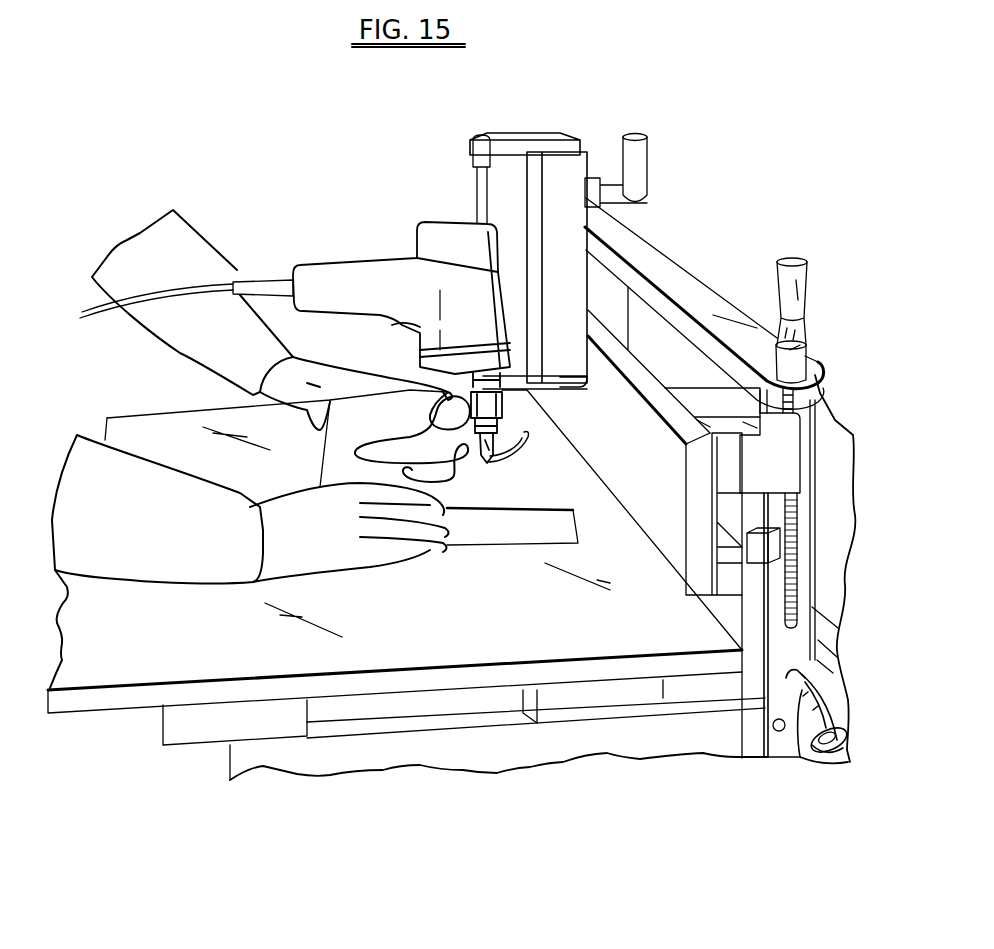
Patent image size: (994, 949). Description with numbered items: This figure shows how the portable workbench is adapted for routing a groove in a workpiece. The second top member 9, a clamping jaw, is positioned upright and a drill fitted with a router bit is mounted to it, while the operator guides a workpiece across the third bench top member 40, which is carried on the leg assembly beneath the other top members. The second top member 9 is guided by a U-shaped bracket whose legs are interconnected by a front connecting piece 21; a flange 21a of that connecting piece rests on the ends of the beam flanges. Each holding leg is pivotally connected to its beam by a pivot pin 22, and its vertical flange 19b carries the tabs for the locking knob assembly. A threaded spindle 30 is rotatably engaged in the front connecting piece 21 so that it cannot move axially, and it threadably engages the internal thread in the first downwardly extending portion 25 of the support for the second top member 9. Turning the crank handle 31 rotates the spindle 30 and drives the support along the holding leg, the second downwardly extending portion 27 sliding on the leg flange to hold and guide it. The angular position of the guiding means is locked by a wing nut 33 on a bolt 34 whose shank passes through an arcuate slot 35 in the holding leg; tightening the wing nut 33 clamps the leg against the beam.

The second top member 9 is at (674, 545).
The third bench top member 40 is at (576, 633).
The front connecting piece 21 is at (777, 410).
The flange 21a is at (667, 305).
The first downwardly extending portion 25 is at (792, 457).
The second downwardly extending portion 27 is at (777, 550).
The threaded spindle 30 is at (793, 600).
The crank handle 31 is at (795, 292).
The vertical flange 19b is at (793, 643).
The pivot pin 22 is at (779, 732).
The wing nut 33 is at (848, 752).
The bolt 34 is at (822, 720).
The arcuate slot 35 is at (802, 760).